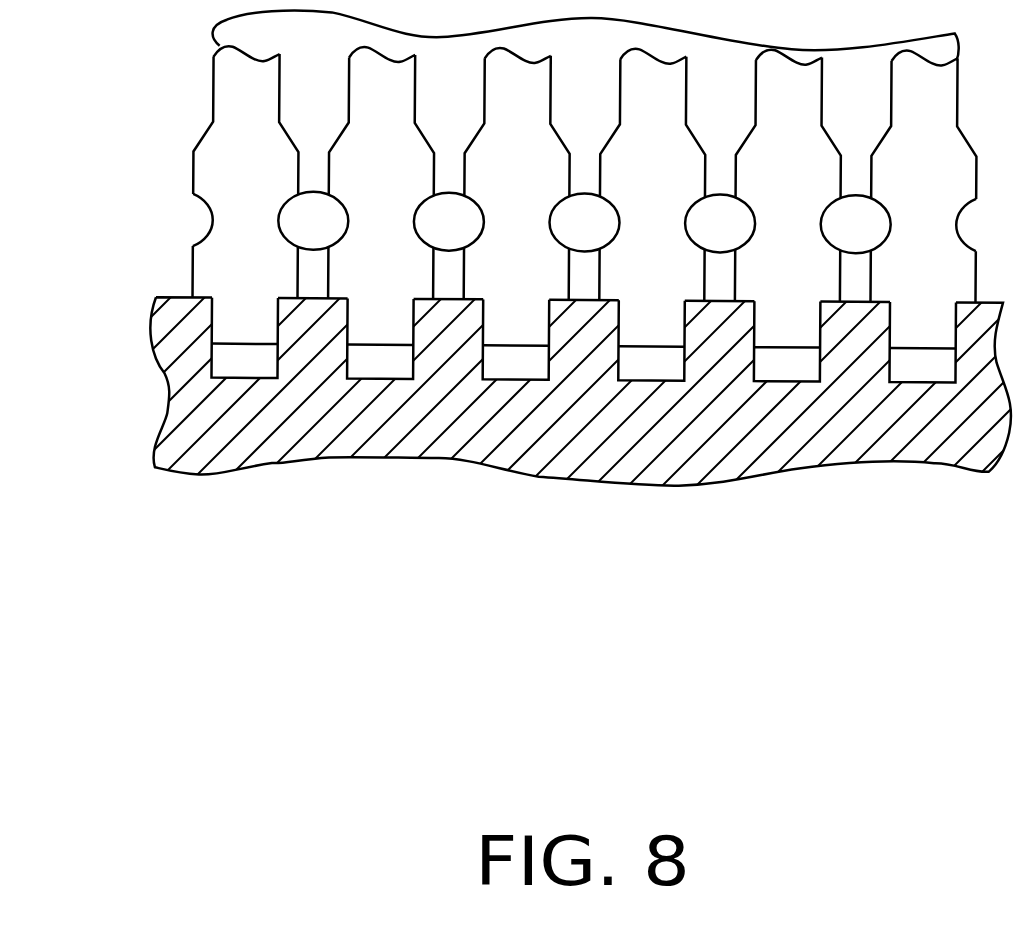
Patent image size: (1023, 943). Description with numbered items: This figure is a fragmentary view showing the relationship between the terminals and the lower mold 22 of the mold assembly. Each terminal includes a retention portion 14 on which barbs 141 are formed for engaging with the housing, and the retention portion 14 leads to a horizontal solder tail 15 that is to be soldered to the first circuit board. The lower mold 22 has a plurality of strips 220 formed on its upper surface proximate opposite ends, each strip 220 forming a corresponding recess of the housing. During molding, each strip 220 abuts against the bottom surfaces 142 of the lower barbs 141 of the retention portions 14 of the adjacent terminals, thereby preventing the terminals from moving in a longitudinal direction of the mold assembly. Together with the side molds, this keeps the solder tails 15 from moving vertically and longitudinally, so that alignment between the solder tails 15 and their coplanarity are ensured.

The retention portion 14 is at (243, 170).
The barbs 141 is at (194, 260).
The bottom surfaces 142 is at (158, 371).
The solder tail 15 is at (248, 360).
The lower mold 22 is at (546, 447).
The strips 220 is at (718, 318).